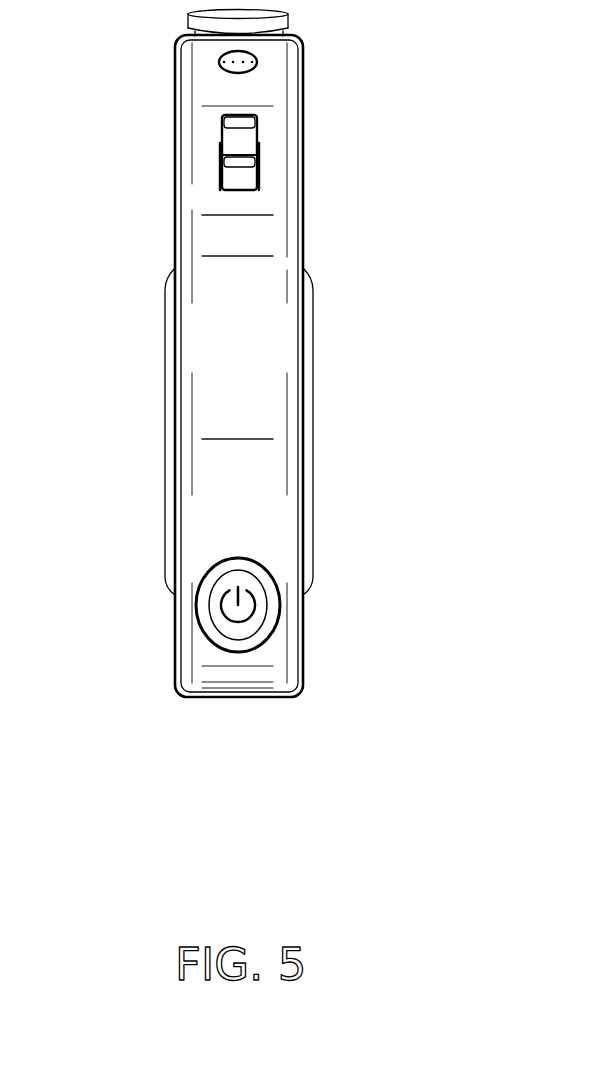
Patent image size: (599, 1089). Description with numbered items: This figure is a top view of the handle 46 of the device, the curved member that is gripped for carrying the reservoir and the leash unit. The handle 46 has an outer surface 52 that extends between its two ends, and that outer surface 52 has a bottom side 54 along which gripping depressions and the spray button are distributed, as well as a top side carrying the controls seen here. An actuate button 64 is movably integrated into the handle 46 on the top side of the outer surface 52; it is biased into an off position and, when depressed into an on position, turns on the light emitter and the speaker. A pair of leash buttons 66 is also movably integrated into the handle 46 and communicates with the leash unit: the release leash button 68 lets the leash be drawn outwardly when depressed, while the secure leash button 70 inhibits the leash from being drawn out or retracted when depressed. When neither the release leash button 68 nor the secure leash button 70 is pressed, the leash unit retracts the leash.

The handle 46 is at (192, 383).
The outer surface 52 is at (259, 373).
The bottom side 54 is at (218, 238).
The actuate button 64 is at (265, 610).
The leash buttons 66 is at (200, 115).
The release leash button 68 is at (255, 165).
The secure leash button 70 is at (255, 120).